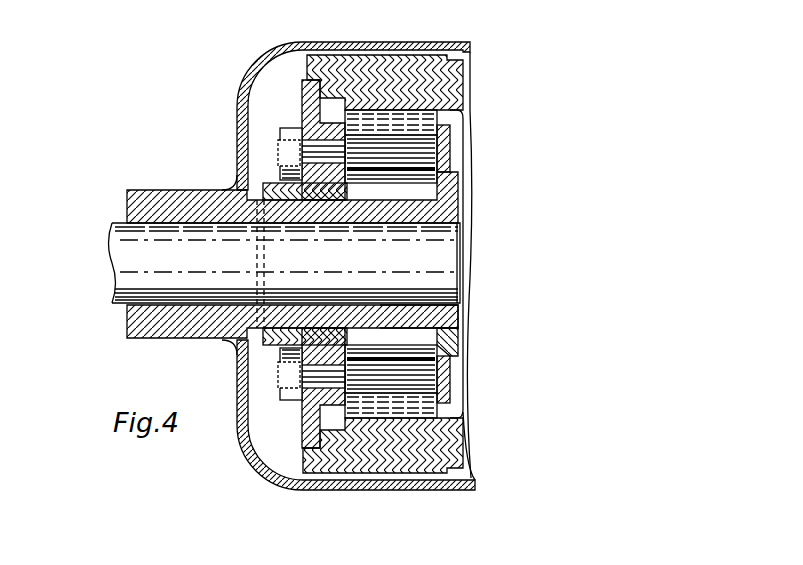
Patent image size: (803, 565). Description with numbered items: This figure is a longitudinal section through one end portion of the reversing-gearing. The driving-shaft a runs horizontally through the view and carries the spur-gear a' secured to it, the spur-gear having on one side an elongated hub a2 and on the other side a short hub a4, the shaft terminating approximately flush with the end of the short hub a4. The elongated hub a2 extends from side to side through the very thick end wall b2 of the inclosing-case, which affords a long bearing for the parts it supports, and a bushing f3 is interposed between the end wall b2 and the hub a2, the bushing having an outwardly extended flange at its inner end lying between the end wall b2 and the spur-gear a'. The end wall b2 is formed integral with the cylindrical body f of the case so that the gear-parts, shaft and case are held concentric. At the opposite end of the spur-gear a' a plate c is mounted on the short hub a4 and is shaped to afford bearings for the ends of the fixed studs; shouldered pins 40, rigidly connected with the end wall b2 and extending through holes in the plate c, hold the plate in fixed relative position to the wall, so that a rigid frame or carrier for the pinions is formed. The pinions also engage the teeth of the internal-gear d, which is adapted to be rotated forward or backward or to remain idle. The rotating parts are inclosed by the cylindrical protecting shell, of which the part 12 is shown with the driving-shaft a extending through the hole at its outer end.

The protecting shell part 12 is at (440, 47).
The driving-shaft a is at (251, 264).
The spur-gear a' is at (318, 255).
The elongated hub a2 is at (265, 340).
The short hub a4 is at (450, 320).
The end wall b2 is at (302, 108).
The plate c is at (448, 344).
The internal-gear d is at (430, 117).
The cylindrical body f is at (438, 88).
The bushing f3 is at (263, 188).
The shouldered pins 40 is at (422, 157).